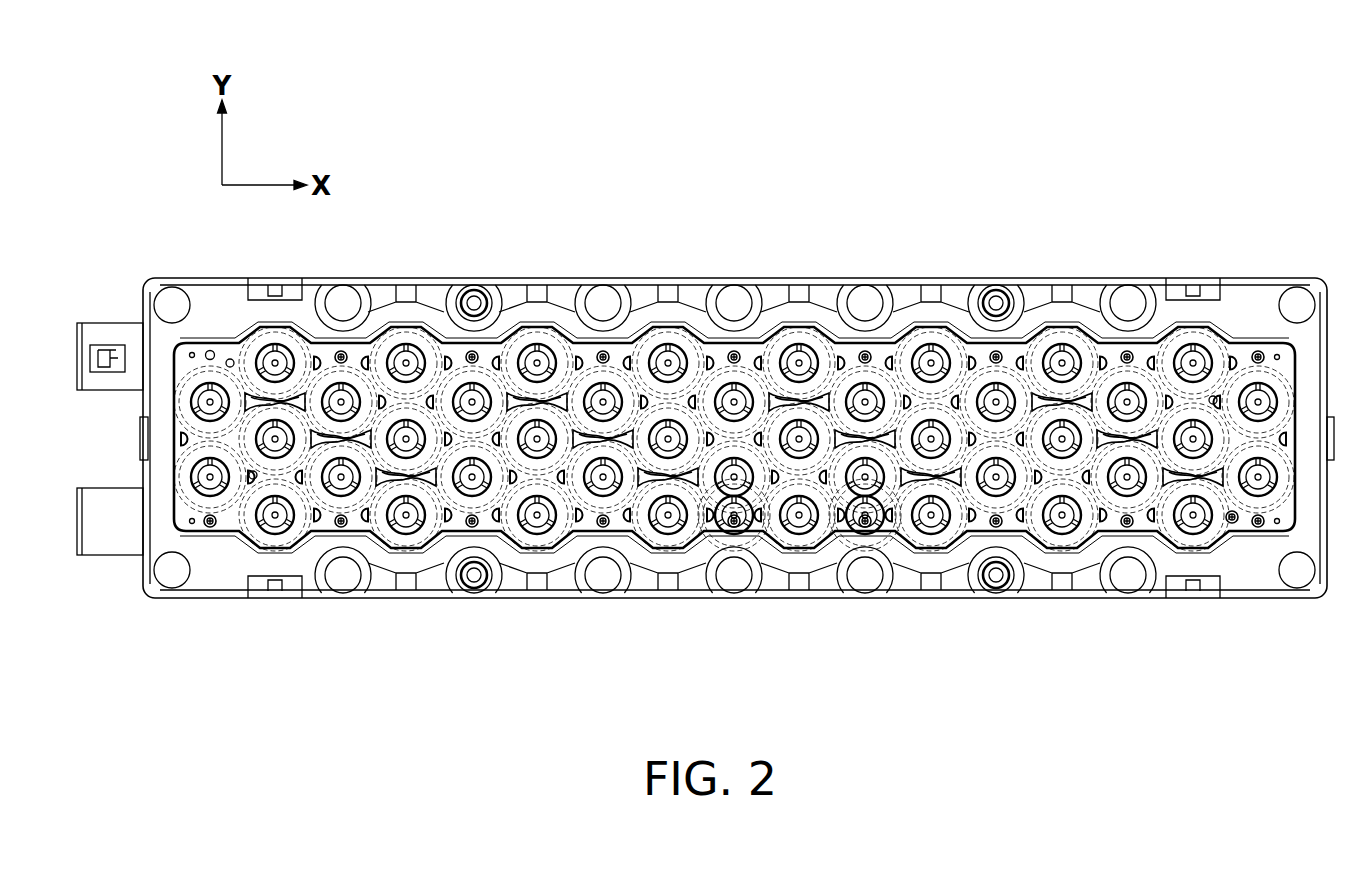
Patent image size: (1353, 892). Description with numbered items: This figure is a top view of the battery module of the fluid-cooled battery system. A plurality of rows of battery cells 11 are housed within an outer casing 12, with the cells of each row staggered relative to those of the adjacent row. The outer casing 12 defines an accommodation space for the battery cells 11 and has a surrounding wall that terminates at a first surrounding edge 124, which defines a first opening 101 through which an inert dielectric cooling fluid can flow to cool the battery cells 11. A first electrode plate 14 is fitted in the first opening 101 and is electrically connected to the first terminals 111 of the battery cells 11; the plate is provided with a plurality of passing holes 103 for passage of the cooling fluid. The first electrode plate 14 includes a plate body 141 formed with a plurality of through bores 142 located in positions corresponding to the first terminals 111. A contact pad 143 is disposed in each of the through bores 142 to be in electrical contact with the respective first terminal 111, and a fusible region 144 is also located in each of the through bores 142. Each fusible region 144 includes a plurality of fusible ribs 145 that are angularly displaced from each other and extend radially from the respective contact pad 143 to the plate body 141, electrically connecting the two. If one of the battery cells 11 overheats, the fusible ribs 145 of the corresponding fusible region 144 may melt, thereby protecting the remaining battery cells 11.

The battery cells 11 is at (882, 508).
The outer casing 12 is at (188, 616).
The first electrode plate 14 is at (458, 520).
The first opening 101 is at (1223, 343).
The passing holes 103 is at (1025, 355).
The first terminal 111 is at (733, 485).
The first surrounding edge 124 is at (1095, 340).
The plate body 141 is at (487, 355).
The through bores 142 is at (810, 357).
The contact pads 143 is at (670, 357).
The fusible regions 144 is at (1060, 535).
The fusible ribs 145 is at (1205, 522).